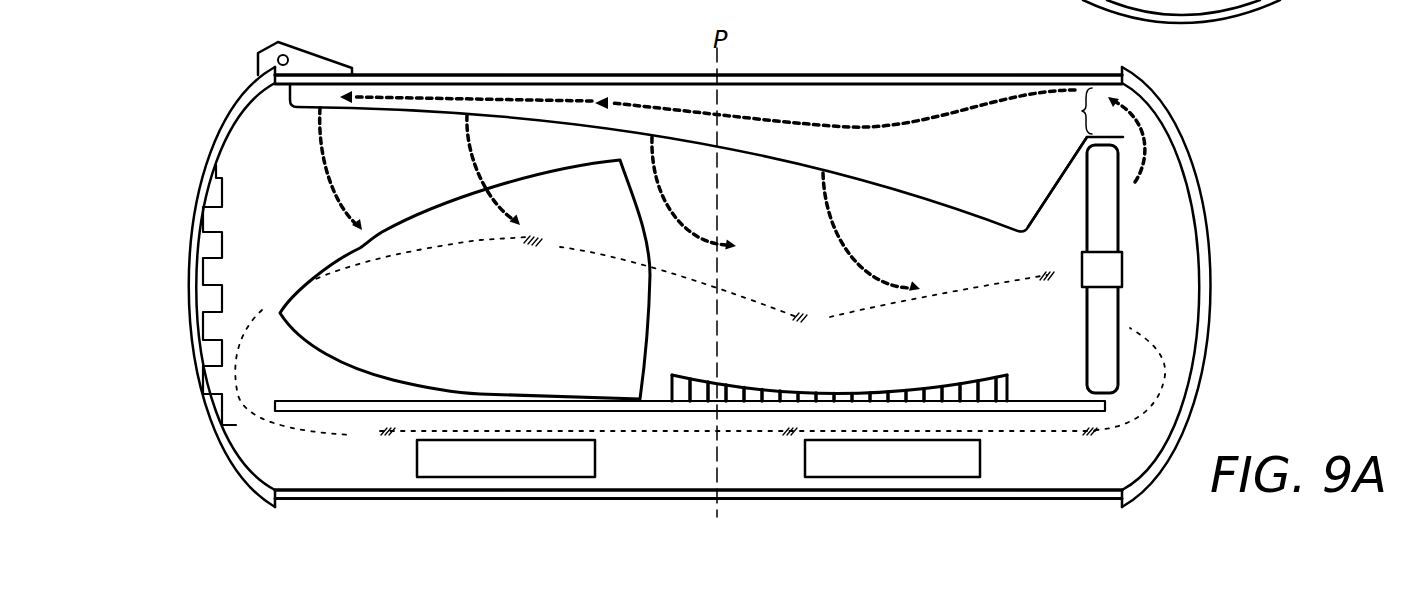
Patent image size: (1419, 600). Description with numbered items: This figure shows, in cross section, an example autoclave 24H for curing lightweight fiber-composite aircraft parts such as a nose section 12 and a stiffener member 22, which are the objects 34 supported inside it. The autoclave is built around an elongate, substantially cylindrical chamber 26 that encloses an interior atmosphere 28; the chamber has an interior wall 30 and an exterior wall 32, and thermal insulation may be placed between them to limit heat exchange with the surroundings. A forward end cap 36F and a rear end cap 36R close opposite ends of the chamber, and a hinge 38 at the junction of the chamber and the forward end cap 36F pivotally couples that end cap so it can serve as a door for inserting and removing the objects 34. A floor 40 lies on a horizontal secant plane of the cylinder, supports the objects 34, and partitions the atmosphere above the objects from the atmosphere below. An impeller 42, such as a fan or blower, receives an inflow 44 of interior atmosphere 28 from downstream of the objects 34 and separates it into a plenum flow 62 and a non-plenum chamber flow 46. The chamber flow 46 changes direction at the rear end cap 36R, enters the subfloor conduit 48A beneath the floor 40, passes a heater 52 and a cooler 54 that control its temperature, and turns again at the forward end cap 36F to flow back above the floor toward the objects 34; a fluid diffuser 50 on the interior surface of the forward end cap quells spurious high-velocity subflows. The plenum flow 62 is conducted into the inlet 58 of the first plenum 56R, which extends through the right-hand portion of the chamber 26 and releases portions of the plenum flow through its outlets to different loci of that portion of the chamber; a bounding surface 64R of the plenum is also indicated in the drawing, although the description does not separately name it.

The nose section 12 is at (477, 292).
The stiffener member 22 is at (916, 398).
The autoclave 24H is at (1397, 0).
The elongate chamber 26 is at (820, 62).
The interior atmosphere 28 is at (303, 212).
The interior wall 30 is at (1086, 489).
The exterior wall 32 is at (842, 72).
The objects 34 is at (778, 290).
The forward end cap 36F is at (186, 276).
The rear end cap 36R is at (1211, 287).
The hinge 38 is at (314, 53).
The floor 40 is at (367, 400).
The impeller 42 is at (1112, 284).
The inflow 44 is at (1050, 315).
The chamber flow 46 is at (1192, 359).
The subfloor conduit 48A is at (684, 464).
The fluid diffuser 50 is at (223, 427).
The heater 52 is at (515, 472).
The cooler 54 is at (902, 472).
The first plenum 56R is at (994, 177).
The inlet 58 is at (1076, 111).
The plenum flow 62 is at (857, 124).
The rear baffle 64R is at (985, 224).